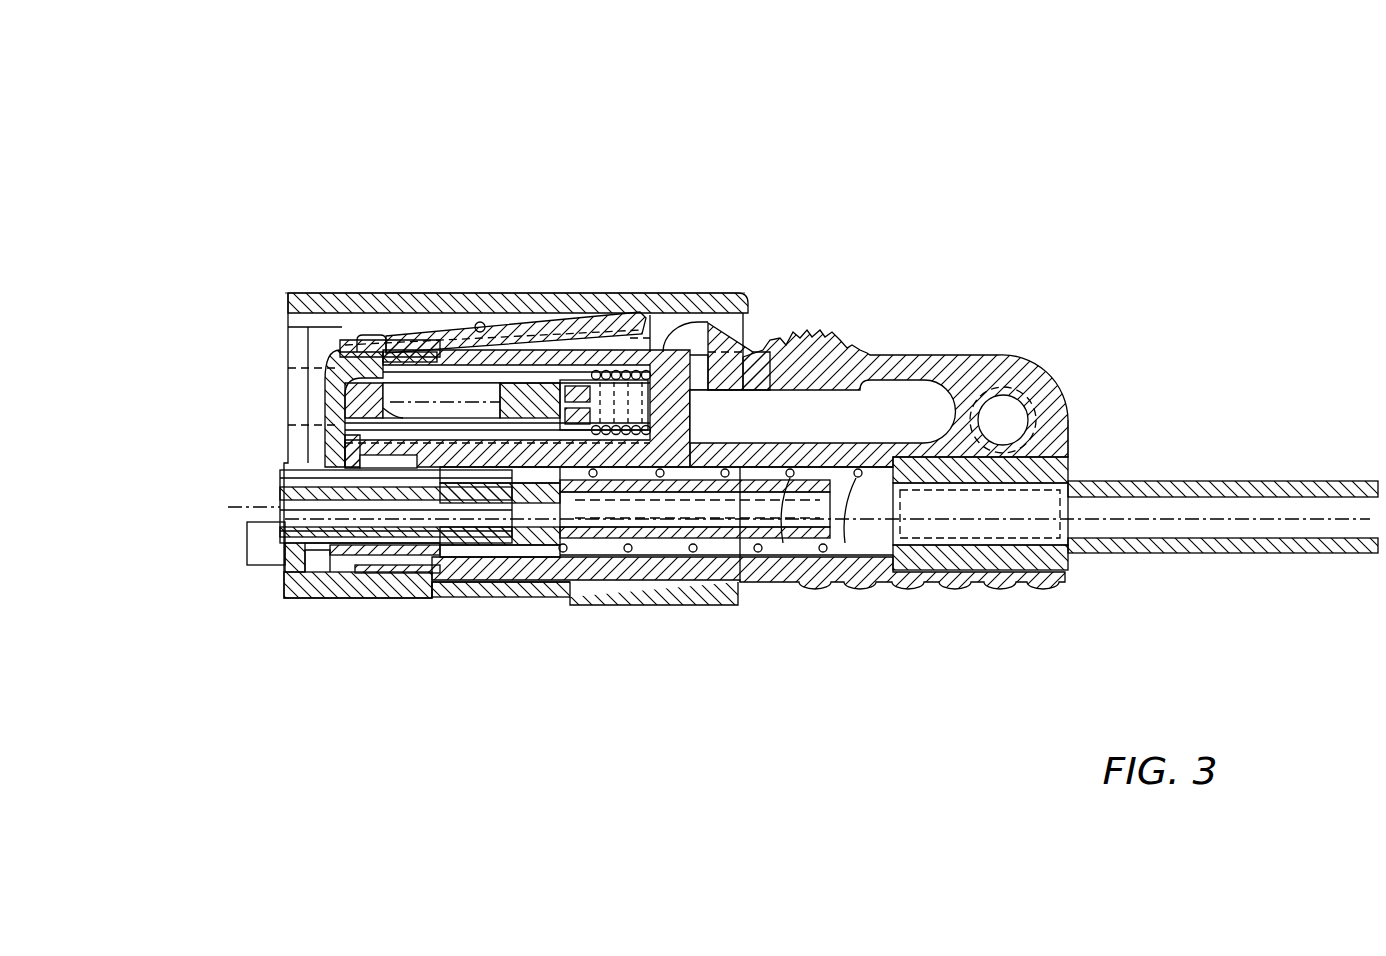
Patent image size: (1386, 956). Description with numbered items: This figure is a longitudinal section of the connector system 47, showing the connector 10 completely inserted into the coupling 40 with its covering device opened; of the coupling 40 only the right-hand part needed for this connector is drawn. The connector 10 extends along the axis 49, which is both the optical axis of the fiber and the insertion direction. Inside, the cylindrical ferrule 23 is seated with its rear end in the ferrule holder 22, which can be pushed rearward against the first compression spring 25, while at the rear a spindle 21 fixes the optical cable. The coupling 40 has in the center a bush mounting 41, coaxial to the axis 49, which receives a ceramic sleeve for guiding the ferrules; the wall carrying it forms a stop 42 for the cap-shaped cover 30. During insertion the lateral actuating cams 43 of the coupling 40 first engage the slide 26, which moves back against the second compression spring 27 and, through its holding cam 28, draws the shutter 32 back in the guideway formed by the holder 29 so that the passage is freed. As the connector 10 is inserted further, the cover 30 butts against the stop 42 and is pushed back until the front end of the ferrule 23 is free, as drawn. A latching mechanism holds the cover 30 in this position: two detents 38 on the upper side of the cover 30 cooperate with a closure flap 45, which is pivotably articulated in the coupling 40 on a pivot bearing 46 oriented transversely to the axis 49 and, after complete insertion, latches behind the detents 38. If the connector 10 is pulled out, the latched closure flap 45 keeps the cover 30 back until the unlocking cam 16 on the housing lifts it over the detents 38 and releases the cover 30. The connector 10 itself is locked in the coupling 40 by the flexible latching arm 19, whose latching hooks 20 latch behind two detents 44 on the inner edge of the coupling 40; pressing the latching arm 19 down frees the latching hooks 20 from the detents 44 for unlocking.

The connector 10 is at (1110, 372).
The unlocking cam 16 is at (340, 293).
The latching arm 19 is at (836, 340).
The latching hooks 20 is at (698, 322).
The spindle 21 is at (1160, 540).
The ferrule holder 22 is at (507, 560).
The ferrule 23 is at (462, 582).
The first compression spring 25 is at (760, 565).
The slide 26 is at (548, 380).
The second compression spring 27 is at (608, 372).
The holding cam 28 is at (586, 372).
The holder 29 is at (327, 438).
The cover 30 is at (307, 390).
The shutter 32 is at (468, 380).
The detents 38 is at (372, 350).
The coupling 40 is at (647, 587).
The bush mounting 41 is at (348, 562).
The stop 42 is at (300, 576).
The actuating cams 43 is at (591, 575).
The detents 44 is at (737, 297).
The closure flap 45 is at (492, 320).
The pivot bearing 46 is at (660, 352).
The connector system 47 is at (262, 205).
The axis 49 is at (237, 503).